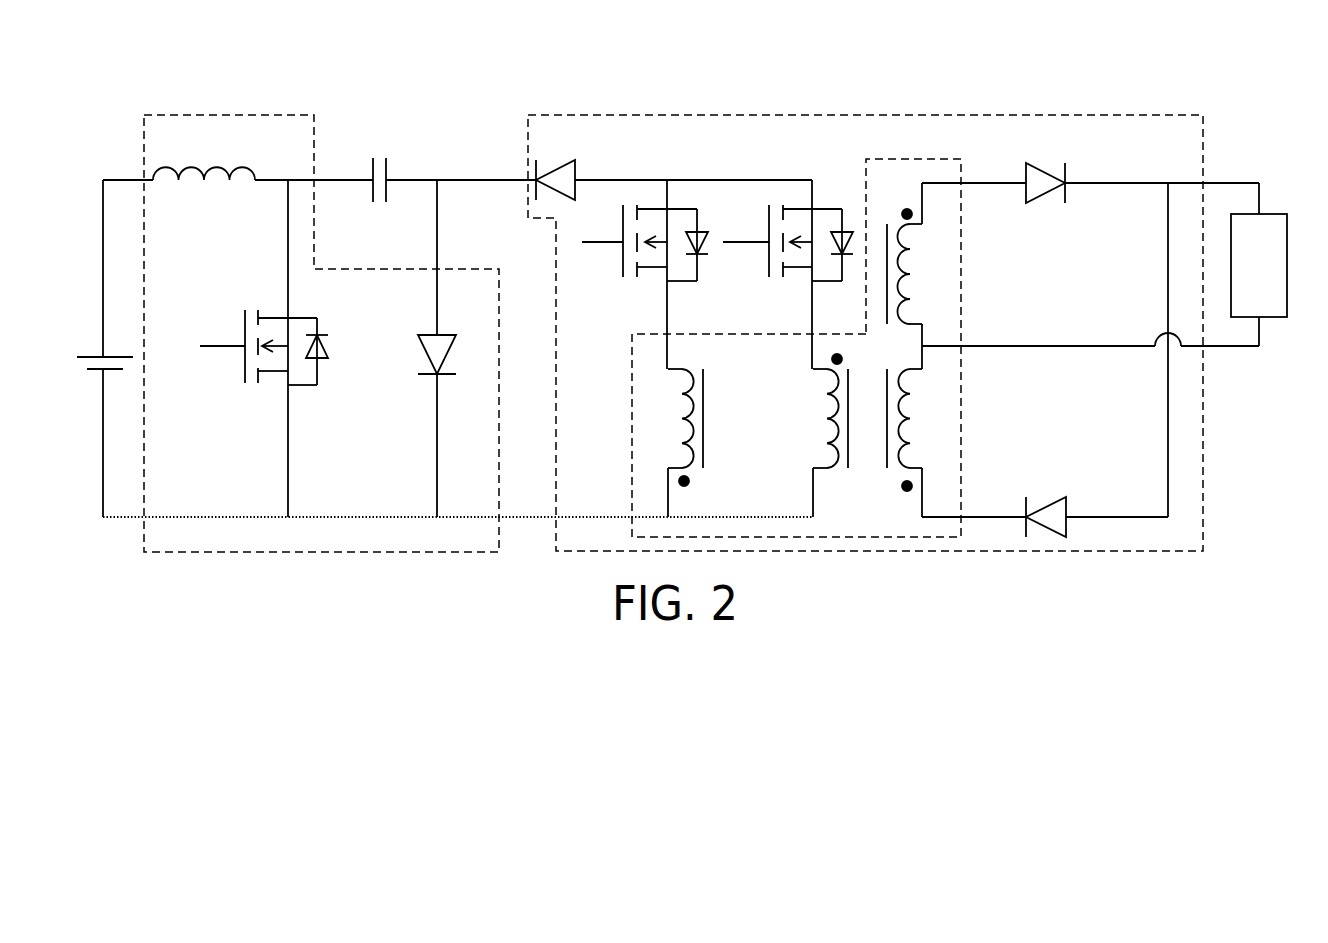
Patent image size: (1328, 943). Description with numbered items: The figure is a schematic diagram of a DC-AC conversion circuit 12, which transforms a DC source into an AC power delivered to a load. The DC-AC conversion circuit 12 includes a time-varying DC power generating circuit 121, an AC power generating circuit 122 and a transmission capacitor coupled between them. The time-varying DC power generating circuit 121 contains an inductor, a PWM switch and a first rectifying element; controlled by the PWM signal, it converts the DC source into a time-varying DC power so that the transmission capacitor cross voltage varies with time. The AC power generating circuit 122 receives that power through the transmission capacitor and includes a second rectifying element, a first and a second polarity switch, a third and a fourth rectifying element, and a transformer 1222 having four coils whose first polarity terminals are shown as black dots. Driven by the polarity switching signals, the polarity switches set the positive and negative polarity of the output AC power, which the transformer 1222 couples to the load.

The DC-AC conversion circuit 12 is at (62, 38).
The time-varying DC power generating circuit 121 is at (208, 115).
The AC power generating circuit 122 is at (1204, 137).
The transformer 1222 is at (962, 274).